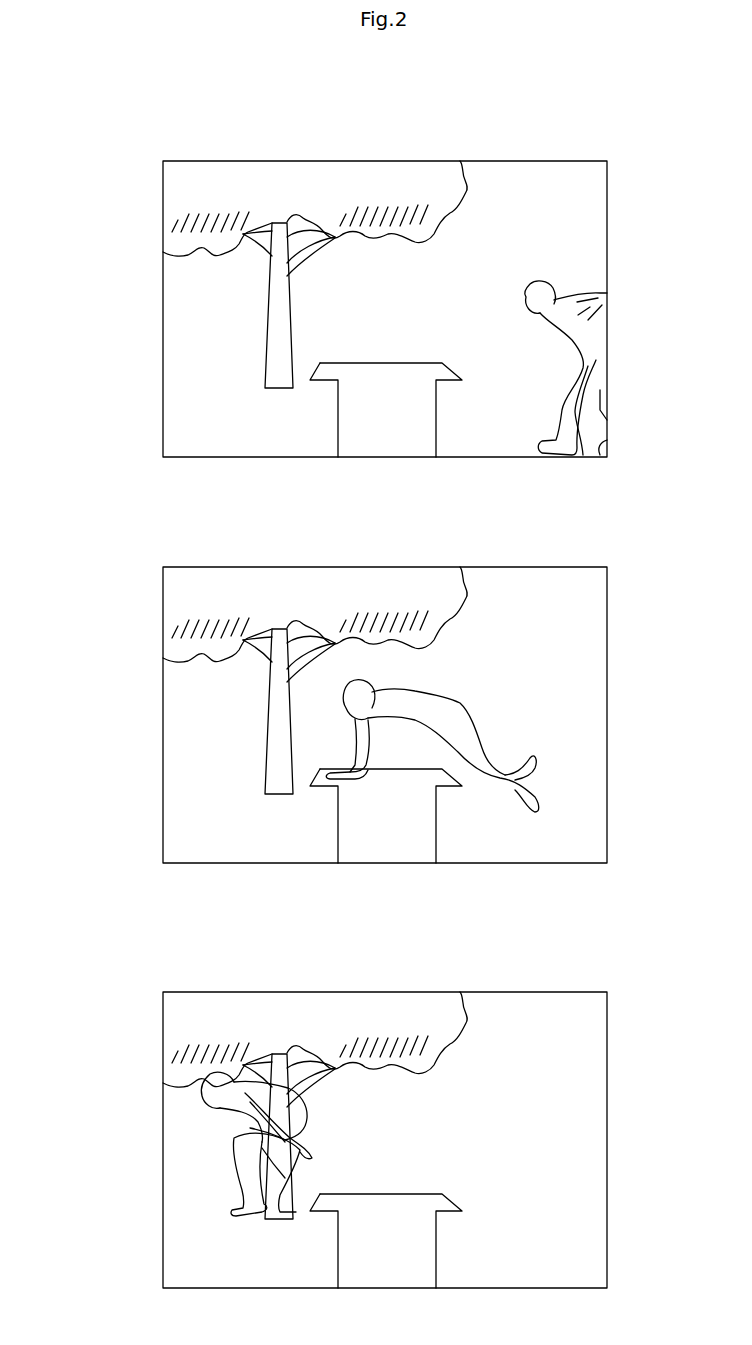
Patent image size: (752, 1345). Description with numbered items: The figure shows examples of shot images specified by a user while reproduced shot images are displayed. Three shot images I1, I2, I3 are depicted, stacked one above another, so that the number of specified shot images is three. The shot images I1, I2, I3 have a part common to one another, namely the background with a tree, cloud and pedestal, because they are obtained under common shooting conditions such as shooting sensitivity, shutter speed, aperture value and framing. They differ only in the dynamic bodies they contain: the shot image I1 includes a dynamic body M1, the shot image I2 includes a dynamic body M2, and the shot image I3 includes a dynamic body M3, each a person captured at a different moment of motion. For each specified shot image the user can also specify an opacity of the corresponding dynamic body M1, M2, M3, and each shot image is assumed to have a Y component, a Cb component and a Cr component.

The dynamic body M1 is at (550, 262).
The dynamic body M2 is at (412, 665).
The dynamic body M3 is at (190, 1103).
The shot image I1 is at (418, 291).
The shot image I2 is at (418, 696).
The shot image I3 is at (360, 1140).